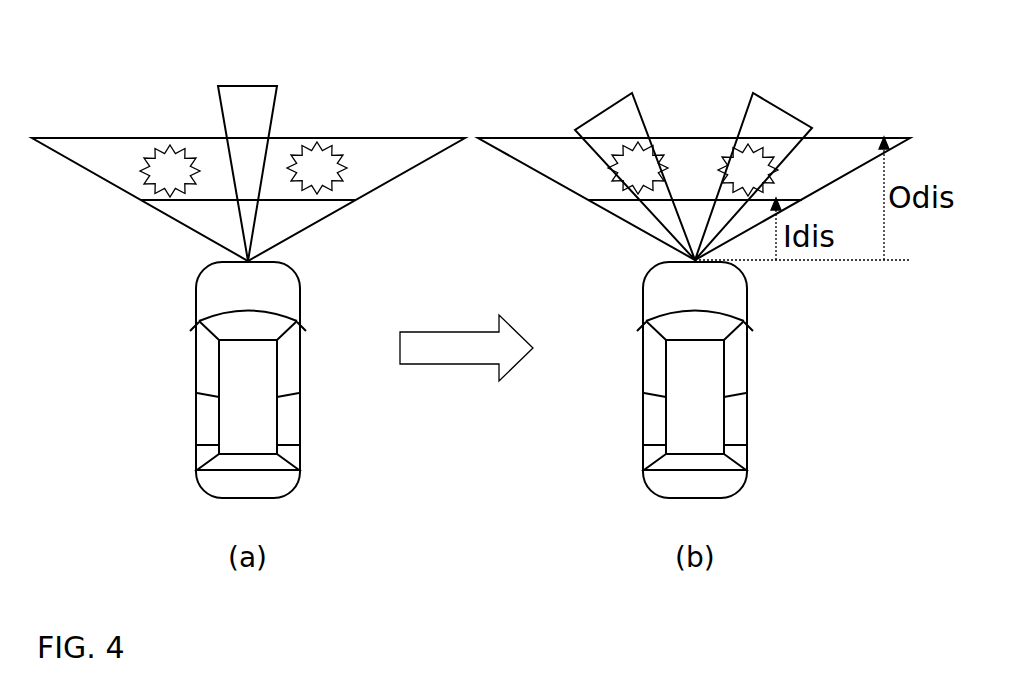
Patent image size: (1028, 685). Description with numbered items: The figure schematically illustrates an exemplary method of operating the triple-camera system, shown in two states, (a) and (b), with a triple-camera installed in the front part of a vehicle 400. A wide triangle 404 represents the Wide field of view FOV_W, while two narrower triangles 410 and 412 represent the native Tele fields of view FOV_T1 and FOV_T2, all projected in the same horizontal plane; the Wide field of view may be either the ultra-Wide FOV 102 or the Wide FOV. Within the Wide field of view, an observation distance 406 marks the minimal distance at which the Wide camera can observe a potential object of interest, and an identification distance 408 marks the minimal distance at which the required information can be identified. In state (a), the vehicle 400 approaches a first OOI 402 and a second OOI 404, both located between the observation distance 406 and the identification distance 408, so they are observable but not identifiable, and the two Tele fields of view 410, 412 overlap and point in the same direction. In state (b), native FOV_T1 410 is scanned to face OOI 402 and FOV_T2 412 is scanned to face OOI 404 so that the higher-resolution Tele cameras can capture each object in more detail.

The ultra-Wide FOV 102 is at (643, 428).
The vehicle 400 is at (471, 298).
The first OOI 402 is at (404, 169).
The second OOI 404 is at (658, 243).
The observation distance 406 is at (577, 132).
The identification distance 408 is at (600, 201).
The triangle representing native FOV_T1 410 is at (223, 113).
The triangle representing native FOV_T2 412 is at (342, 90).